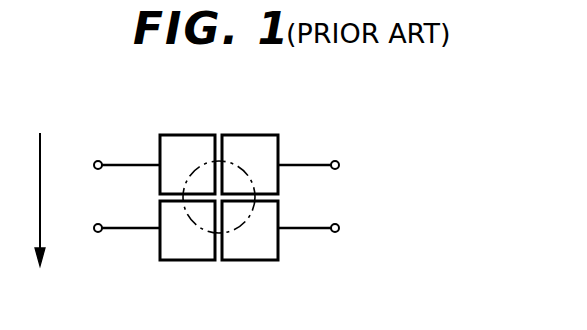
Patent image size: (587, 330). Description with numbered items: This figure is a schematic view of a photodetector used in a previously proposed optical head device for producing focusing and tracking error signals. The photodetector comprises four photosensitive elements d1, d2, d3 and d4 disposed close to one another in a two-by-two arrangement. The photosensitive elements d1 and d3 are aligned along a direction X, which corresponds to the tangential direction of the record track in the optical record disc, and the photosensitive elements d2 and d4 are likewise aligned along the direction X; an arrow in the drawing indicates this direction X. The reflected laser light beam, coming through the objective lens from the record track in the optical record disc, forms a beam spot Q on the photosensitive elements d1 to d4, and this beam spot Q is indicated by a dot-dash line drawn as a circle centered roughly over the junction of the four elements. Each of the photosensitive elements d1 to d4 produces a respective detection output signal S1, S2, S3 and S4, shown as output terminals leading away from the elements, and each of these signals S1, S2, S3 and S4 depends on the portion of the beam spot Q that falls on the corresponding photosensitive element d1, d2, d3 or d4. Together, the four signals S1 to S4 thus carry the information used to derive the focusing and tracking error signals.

The photosensitive element d1 is at (189, 143).
The photosensitive element d2 is at (257, 143).
The photosensitive element d3 is at (190, 253).
The photosensitive element d4 is at (248, 253).
The beam spot Q is at (190, 171).
The detection output signal S1 is at (108, 167).
The detection output signal S2 is at (331, 167).
The detection output signal S3 is at (108, 230).
The detection output signal S4 is at (331, 230).
The direction X is at (31, 199).